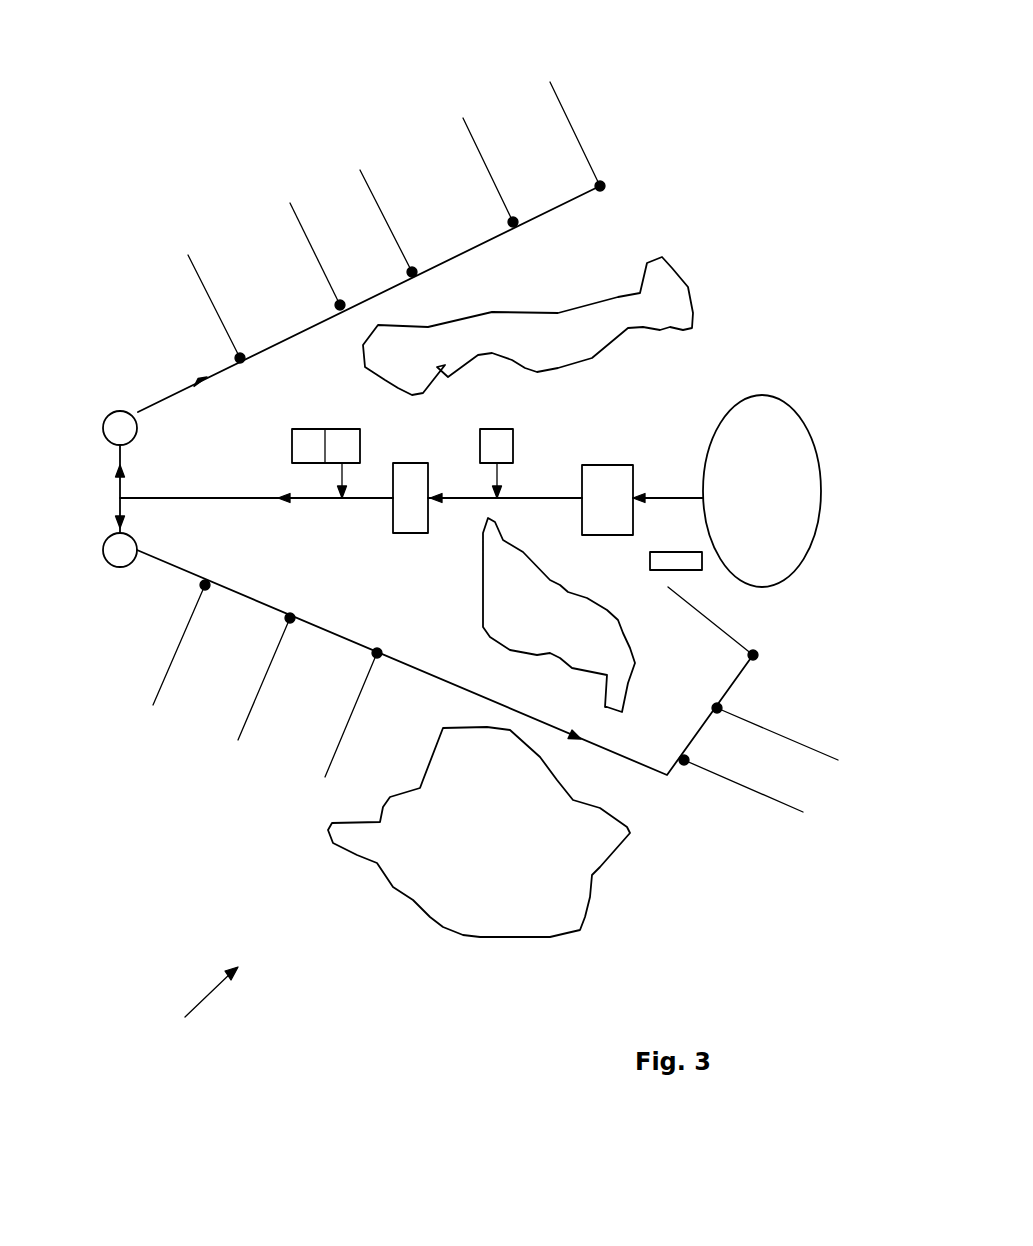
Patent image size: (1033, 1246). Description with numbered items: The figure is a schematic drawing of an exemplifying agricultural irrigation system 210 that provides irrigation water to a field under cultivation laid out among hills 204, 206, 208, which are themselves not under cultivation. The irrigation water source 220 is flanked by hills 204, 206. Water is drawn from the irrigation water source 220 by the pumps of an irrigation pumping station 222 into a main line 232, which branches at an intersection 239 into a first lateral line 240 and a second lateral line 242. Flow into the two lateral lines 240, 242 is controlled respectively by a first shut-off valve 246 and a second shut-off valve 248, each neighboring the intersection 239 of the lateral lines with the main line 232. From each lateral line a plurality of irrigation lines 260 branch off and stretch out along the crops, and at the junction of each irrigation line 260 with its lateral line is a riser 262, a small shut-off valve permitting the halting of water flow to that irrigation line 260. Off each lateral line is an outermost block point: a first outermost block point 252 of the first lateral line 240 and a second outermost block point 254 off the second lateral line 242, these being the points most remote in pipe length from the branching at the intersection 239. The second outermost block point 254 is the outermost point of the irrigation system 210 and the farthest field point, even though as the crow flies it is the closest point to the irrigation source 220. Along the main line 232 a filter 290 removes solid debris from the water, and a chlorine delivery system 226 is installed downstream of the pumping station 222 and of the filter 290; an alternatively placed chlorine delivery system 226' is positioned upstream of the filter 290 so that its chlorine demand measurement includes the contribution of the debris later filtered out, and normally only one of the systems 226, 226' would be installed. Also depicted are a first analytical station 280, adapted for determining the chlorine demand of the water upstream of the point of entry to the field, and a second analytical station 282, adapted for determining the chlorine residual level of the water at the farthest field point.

The hill 204 is at (685, 275).
The hill 206 is at (559, 615).
The hill 208 is at (427, 915).
The irrigation system 210 is at (194, 1009).
The irrigation water source 220 is at (823, 466).
The irrigation pumping station 222 is at (618, 465).
The chlorine delivery system 226 is at (266, 331).
The alternatively placed chlorine delivery system 226' is at (634, 392).
The main line 232 is at (222, 497).
The intersection 239 is at (118, 498).
The first lateral line 240 is at (570, 204).
The second lateral line 242 is at (172, 567).
The first shut-off valve 246 is at (104, 426).
The second shut-off valve 248 is at (103, 556).
The first outermost block point 252 is at (615, 122).
The second outermost block point 254 is at (668, 587).
The irrigation line 260 is at (565, 117).
The riser 262 is at (340, 305).
The first analytical station 280 is at (291, 443).
The second analytical station 282 is at (675, 571).
The filter 290 is at (411, 533).